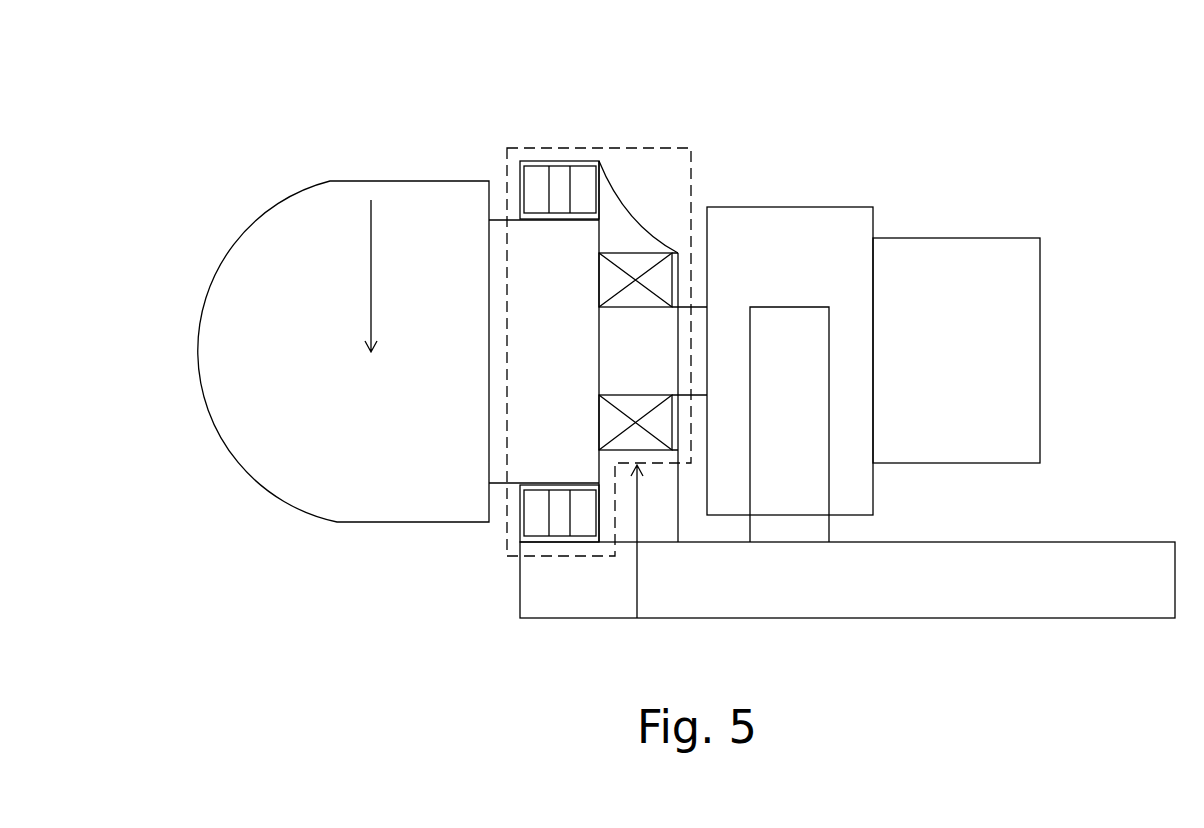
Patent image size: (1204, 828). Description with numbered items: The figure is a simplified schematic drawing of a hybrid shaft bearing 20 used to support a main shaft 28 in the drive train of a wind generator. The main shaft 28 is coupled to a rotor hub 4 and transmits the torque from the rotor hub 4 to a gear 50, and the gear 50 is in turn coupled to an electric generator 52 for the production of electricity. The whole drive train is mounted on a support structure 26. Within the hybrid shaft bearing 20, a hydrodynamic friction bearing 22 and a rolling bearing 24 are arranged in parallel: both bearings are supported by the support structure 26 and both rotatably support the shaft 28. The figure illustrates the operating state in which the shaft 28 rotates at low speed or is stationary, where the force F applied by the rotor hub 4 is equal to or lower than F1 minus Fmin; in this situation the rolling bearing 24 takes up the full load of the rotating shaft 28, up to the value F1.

The rotor hub 4 is at (402, 181).
The hybrid shaft bearing 20 is at (637, 148).
The hydrodynamic friction bearing 22 is at (562, 182).
The rolling bearing 24 is at (640, 263).
The support structure 26 is at (680, 522).
The main shaft 28 is at (563, 350).
The gear 50 is at (783, 207).
The electric generator 52 is at (977, 238).